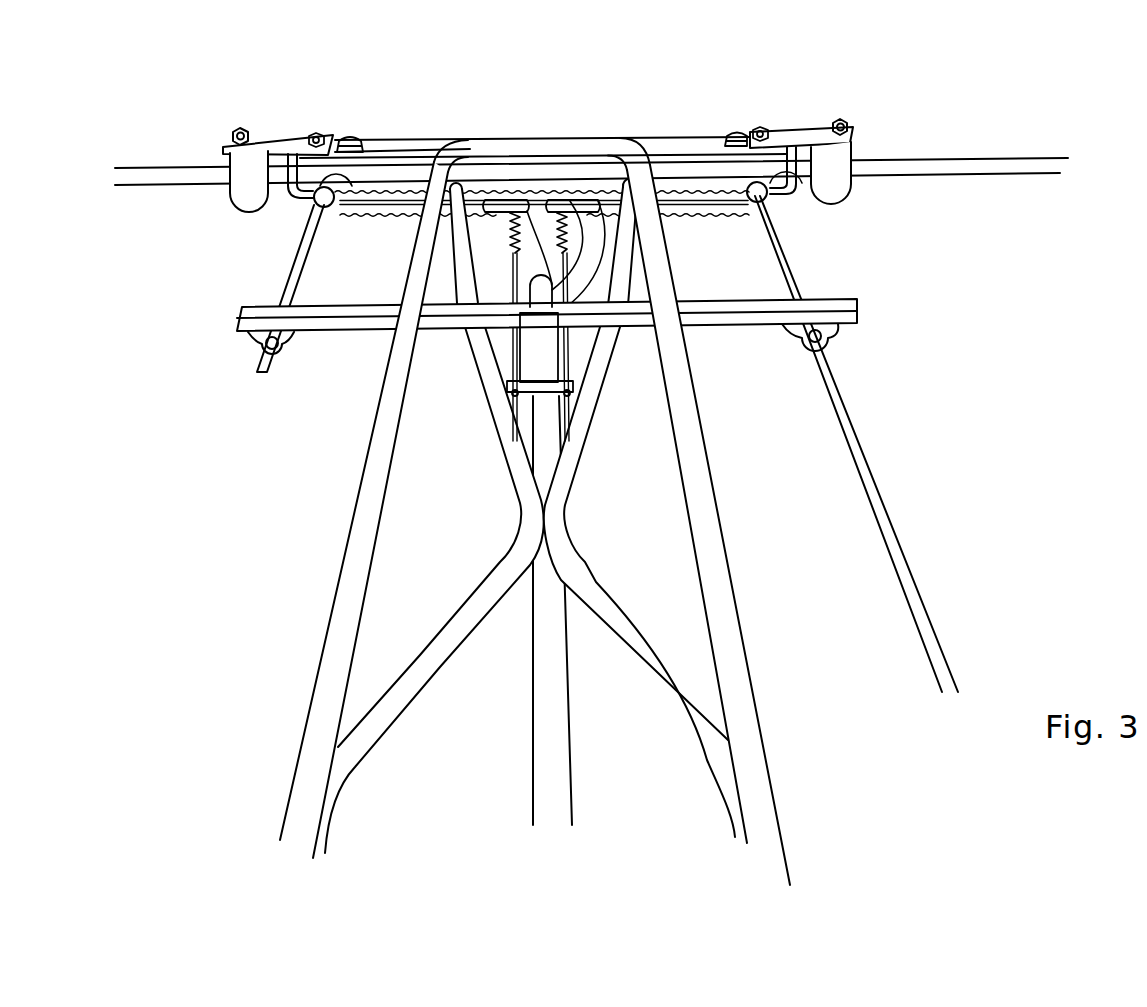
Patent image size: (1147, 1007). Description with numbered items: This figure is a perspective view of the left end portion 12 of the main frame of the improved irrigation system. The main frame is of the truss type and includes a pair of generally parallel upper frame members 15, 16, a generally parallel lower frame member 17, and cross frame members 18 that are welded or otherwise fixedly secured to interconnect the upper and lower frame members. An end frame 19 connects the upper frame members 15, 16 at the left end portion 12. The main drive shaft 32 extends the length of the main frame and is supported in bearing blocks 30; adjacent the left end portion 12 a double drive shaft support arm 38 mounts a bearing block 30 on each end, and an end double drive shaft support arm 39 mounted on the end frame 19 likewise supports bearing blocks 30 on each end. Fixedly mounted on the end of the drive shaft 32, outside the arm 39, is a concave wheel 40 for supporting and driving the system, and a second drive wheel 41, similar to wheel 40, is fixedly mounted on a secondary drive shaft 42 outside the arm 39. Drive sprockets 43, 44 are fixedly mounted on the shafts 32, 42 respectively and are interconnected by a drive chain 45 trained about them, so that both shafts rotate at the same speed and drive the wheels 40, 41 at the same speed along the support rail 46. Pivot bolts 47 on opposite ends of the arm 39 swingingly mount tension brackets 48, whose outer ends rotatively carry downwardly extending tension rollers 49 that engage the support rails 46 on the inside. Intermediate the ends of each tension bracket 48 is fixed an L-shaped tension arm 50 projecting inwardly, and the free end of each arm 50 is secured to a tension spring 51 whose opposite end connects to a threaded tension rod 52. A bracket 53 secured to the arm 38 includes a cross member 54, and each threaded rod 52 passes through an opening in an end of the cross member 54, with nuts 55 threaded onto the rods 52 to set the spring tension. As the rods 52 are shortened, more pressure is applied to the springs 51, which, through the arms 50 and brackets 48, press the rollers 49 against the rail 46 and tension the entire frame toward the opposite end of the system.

The left end portion 12 is at (309, 448).
The upper frame member 15 is at (363, 520).
The upper frame member 16 is at (702, 517).
The lower frame member 17 is at (550, 740).
The cross frame members 18 is at (475, 605).
The end frame 19 is at (487, 148).
The bearing blocks 30 is at (336, 188).
The main drive shaft 32 is at (847, 423).
The double drive shaft support arm 38 is at (727, 307).
The end double drive shaft support arm 39 is at (650, 143).
The concave wheel 40 is at (733, 130).
The second drive wheel 41 is at (349, 135).
The secondary drive shaft 42 is at (295, 277).
The drive sprocket 43 is at (737, 168).
The drive sprocket 44 is at (318, 190).
The drive chain 45 is at (693, 197).
The support rail 46 is at (988, 165).
The pivot bolts 47 is at (318, 135).
The tension brackets 48 is at (270, 138).
The tension rollers 49 is at (240, 185).
The L-shaped tension arm 50 is at (363, 200).
The tension spring 51 is at (530, 204).
The threaded tension rod 52 is at (585, 206).
The bracket 53 is at (540, 343).
The cross member 54 is at (538, 403).
The nuts 55 is at (565, 390).